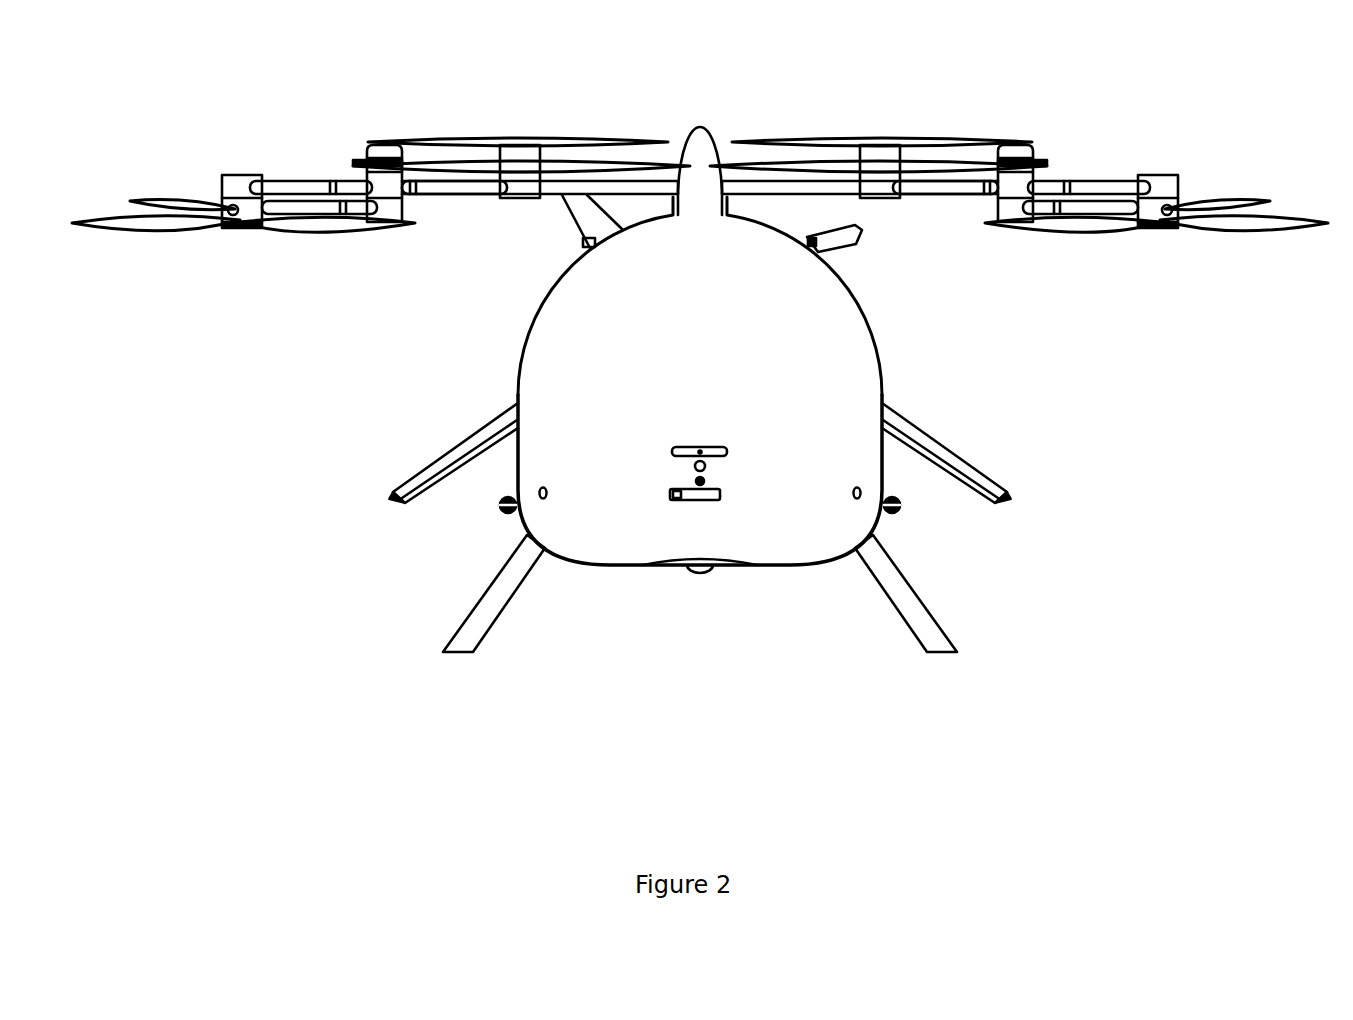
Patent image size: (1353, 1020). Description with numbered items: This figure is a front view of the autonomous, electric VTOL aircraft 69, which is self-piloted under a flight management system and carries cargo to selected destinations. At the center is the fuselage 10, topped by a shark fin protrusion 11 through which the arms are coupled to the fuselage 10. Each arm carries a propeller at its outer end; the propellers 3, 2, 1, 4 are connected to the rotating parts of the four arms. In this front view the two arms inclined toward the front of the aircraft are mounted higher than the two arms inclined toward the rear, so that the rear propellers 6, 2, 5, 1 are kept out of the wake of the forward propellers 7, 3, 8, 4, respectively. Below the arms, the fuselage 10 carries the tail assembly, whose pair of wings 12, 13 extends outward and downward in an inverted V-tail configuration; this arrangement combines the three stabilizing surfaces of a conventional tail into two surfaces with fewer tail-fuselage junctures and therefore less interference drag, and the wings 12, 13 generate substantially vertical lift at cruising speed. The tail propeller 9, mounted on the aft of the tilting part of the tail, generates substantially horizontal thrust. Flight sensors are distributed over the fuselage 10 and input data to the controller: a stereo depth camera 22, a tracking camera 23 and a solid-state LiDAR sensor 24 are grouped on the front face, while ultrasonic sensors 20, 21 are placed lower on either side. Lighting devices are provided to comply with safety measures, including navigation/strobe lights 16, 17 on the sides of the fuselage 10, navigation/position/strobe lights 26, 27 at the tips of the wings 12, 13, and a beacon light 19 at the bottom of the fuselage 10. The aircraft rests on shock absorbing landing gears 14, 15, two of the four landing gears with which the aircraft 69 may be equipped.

The propeller 1 is at (180, 192).
The propeller 2 is at (1230, 192).
The propeller 3 is at (1205, 245).
The propeller 4 is at (192, 240).
The rear propeller 5 is at (458, 132).
The rear propeller 6 is at (943, 135).
The forward propeller 7 is at (937, 177).
The forward propeller 8 is at (462, 180).
The propeller 9 is at (575, 215).
The fuselage 10 is at (648, 331).
The shark fin protrusion 11 is at (702, 153).
The wing 12 is at (443, 443).
The wing 13 is at (955, 442).
The shock absorbing landing gear 14 is at (460, 657).
The shock absorbing landing gear 15 is at (942, 657).
The navigation/strobe light 16 is at (497, 506).
The navigation/strobe light 17 is at (905, 506).
The beacon light 19 is at (698, 587).
The ultrasonic sensor 20 is at (544, 501).
The ultrasonic sensor 21 is at (855, 501).
The stereo depth camera 22 is at (697, 443).
The tracking camera 23 is at (712, 502).
The solid-state LiDAR sensor 24 is at (705, 470).
The navigation/position/strobe light 26 is at (392, 498).
The navigation/position/strobe light 27 is at (1010, 497).
The VTOL aircraft 69 is at (1130, 643).